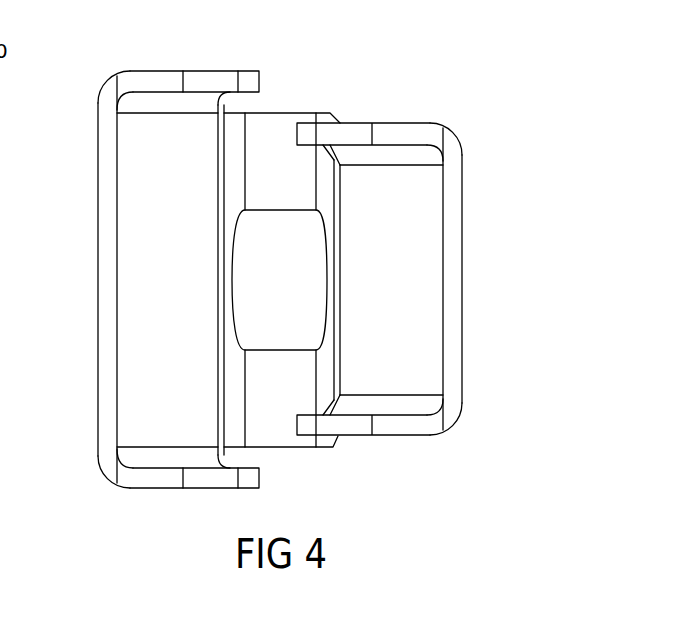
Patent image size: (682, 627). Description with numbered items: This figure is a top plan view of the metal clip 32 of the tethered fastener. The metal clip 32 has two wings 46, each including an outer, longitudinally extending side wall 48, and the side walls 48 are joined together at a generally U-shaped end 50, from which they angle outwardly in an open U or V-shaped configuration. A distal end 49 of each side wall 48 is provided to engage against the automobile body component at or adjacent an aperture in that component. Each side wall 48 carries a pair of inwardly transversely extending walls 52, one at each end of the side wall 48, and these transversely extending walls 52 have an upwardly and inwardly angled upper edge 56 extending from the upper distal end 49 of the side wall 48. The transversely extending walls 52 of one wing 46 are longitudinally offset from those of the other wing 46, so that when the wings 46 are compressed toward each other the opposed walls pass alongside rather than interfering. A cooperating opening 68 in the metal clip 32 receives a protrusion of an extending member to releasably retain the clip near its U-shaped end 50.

The metal clip 32 is at (291, 52).
The wing 46 is at (469, 237).
The side wall 48 is at (157, 291).
The distal end 49 is at (105, 188).
The U-shaped end 50 is at (275, 130).
The transversely extending wall 52 is at (165, 72).
The upper edge 56 is at (131, 79).
The opening 68 is at (325, 279).